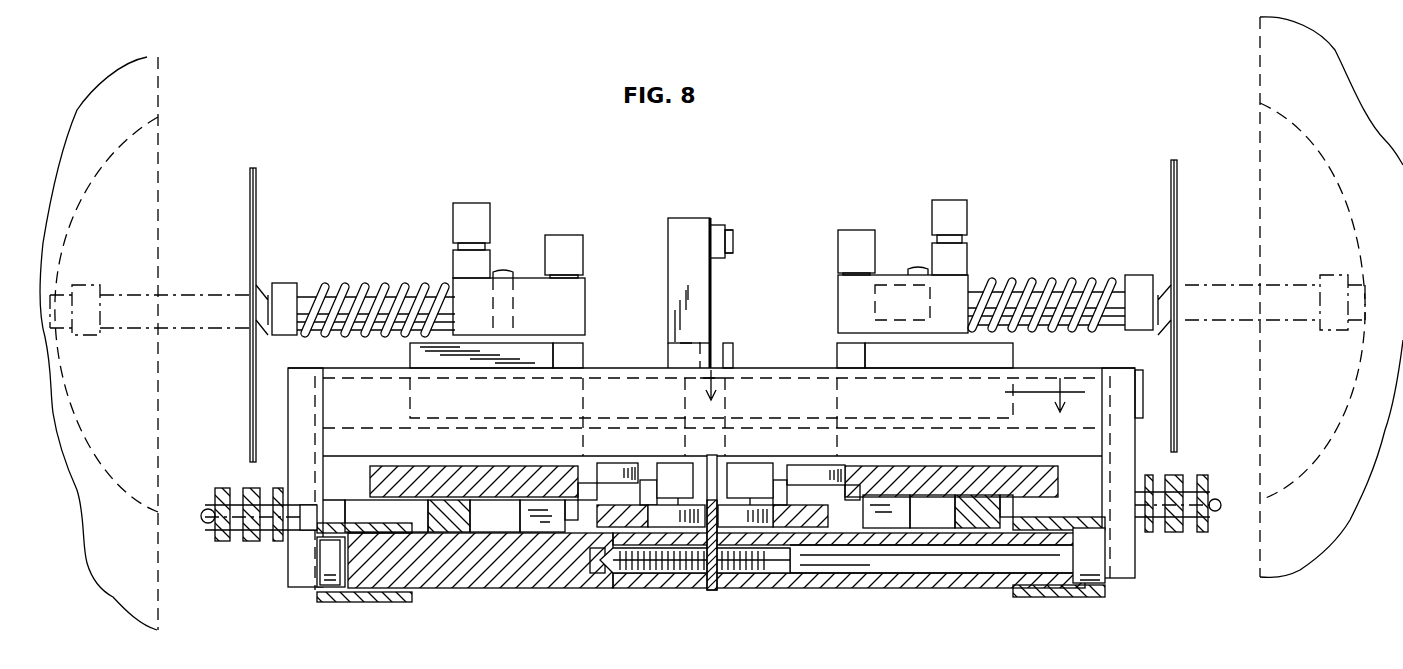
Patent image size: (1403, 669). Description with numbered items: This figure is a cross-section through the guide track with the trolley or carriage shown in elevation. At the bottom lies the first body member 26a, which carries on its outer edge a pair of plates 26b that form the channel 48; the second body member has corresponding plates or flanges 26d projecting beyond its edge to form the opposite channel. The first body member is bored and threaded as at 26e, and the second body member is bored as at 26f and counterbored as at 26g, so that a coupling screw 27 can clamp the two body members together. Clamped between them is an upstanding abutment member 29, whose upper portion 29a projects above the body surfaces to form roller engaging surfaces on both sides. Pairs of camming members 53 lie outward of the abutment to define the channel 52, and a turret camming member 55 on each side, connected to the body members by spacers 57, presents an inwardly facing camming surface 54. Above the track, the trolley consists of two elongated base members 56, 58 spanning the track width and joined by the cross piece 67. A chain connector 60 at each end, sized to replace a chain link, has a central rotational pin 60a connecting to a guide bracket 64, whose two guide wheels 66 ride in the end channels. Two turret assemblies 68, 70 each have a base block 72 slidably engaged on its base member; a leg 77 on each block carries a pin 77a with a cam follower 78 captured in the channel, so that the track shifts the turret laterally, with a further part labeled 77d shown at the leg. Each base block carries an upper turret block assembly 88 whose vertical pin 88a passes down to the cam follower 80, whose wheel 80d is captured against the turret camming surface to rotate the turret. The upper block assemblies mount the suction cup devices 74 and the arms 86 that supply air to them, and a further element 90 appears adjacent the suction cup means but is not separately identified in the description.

The first body member 26a is at (385, 575).
The plates 26b is at (357, 527).
The plates or flanges 26d is at (1076, 517).
The bored and threaded hole 26e is at (706, 585).
The bore 26f is at (788, 560).
The counterbore 26g is at (955, 562).
The coupling screw 27 is at (826, 570).
The upstanding abutment member 29 is at (714, 562).
The projecting portion of abutment member 29a is at (712, 465).
The channel 48 is at (345, 582).
The channel 52 is at (630, 527).
The camming members 53 is at (652, 483).
The inwardly facing camming surface 54 is at (590, 490).
The turret camming member 55 is at (447, 470).
The base member 56 is at (1060, 372).
The spacers 57 is at (530, 524).
The base member 58 is at (1095, 390).
The chain connector 60 is at (230, 540).
The central rotational pin 60a is at (203, 518).
The guide bracket 64 is at (292, 455).
The guide wheels 66 is at (325, 572).
The cross piece 67 is at (698, 218).
The turret assembly 68 is at (650, 340).
The turret assembly 70 is at (752, 342).
The base block 72 is at (603, 345).
The suction cup devices 74 is at (257, 283).
The leg 77 is at (670, 463).
The pin 77a is at (752, 478).
The holder part 77d is at (677, 478).
The cam follower 78 is at (678, 500).
The cam follower 80 is at (622, 528).
The cam follower wheel 80d is at (606, 468).
The arm 86 is at (358, 300).
The upper turret block assembly 88 is at (527, 278).
The pin 88a is at (502, 268).
The screw shaft 90 is at (424, 300).